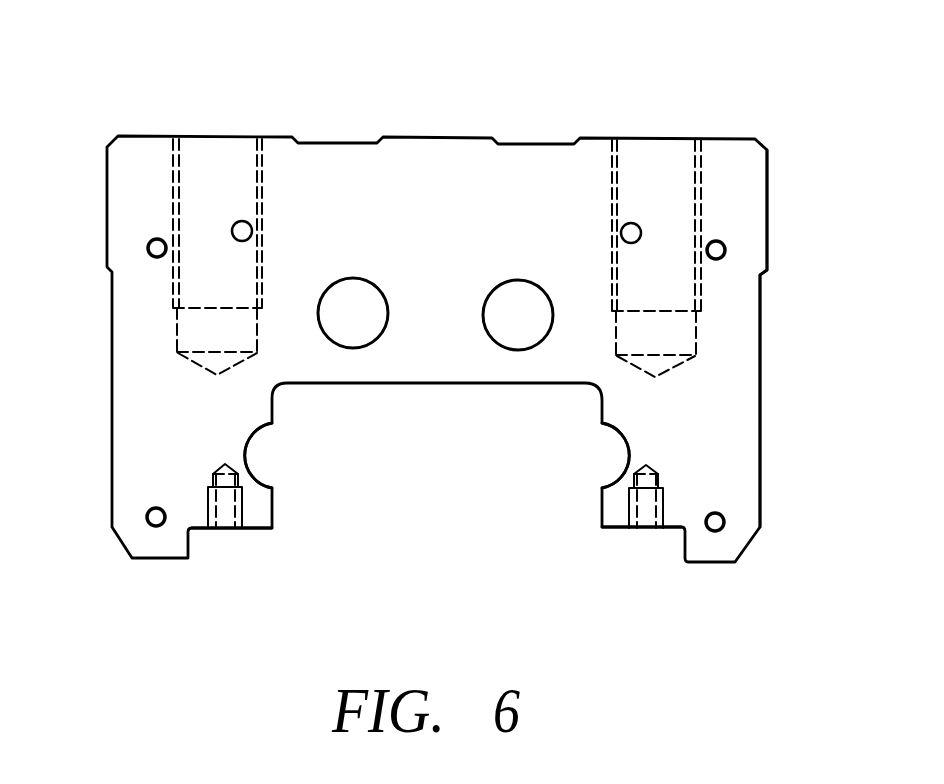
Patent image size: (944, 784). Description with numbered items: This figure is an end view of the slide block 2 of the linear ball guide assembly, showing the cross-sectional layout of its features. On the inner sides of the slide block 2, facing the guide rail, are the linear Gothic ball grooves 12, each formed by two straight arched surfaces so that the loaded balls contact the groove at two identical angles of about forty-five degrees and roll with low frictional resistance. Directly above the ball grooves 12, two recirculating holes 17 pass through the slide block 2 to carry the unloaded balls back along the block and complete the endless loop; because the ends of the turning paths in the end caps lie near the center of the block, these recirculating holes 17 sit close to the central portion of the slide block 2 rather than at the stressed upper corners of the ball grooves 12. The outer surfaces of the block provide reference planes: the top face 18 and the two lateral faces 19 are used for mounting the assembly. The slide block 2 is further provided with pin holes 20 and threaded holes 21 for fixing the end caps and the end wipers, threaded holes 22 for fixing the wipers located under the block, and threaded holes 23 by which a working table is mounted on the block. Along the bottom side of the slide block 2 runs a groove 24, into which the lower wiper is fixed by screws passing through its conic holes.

The slide block 2 is at (433, 177).
The Gothic ball groove 12 is at (248, 435).
The recirculating hole 17 is at (362, 300).
The top face 18 is at (225, 132).
The lateral face 19 is at (768, 248).
The pin hole 20 is at (243, 230).
The threaded hole 21 is at (147, 248).
The threaded hole 22 is at (222, 528).
The threaded hole 23 is at (233, 177).
The groove 24 is at (255, 530).